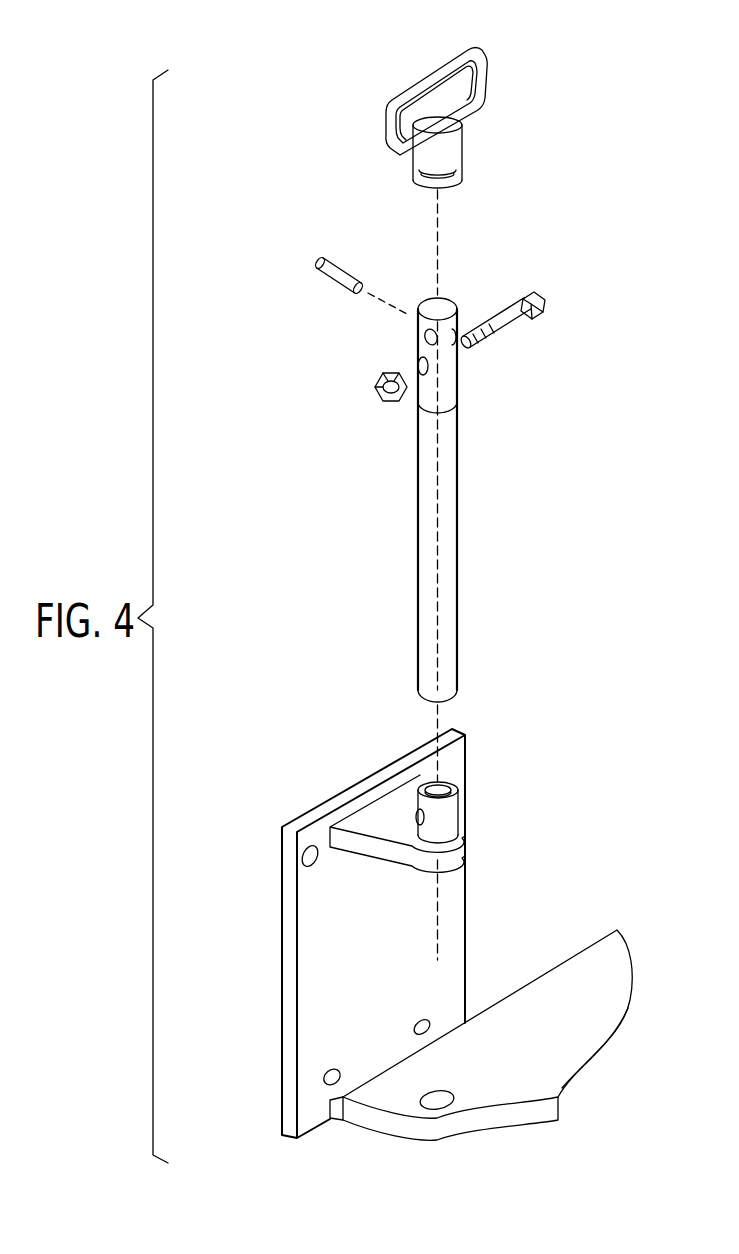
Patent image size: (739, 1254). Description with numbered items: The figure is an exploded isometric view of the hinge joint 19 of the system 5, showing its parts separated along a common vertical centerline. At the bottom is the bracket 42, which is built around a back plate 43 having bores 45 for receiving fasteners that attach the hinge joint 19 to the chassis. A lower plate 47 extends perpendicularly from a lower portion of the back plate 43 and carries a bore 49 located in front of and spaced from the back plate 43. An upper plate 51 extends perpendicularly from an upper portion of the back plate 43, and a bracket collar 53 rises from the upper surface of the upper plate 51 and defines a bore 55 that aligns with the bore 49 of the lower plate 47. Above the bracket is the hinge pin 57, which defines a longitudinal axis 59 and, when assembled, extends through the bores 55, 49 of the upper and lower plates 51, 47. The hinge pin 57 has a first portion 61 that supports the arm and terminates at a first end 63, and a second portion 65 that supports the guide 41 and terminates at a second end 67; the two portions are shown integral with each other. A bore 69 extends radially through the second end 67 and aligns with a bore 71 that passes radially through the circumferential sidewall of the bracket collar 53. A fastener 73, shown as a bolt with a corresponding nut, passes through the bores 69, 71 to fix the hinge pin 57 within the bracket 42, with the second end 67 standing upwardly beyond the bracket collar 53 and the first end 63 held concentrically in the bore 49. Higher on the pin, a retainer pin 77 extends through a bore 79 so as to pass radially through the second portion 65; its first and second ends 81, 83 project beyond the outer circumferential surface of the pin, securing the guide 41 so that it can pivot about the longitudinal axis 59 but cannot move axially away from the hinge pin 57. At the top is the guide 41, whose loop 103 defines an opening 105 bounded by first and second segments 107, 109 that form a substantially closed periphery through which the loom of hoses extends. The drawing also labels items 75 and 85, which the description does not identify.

The system 5 is at (556, 184).
The hinge joint 19 is at (498, 1067).
The guide 41 is at (444, 111).
The bracket 42 is at (420, 967).
The back plate 43 is at (337, 952).
The bores 45 is at (308, 864).
The lower plate 47 is at (527, 1052).
The bore 49 is at (440, 1095).
The upper plate 51 is at (428, 826).
The bracket collar 53 is at (458, 844).
The bore 55 is at (447, 795).
The hinge pin 57 is at (420, 500).
The longitudinal axis 59 is at (438, 556).
The first portion 61 is at (469, 521).
The first end 63 is at (456, 689).
The second portion 65 is at (466, 392).
The second end 67 is at (430, 338).
The bore 69 is at (422, 366).
The bore 71 is at (419, 826).
The fastener 73 is at (486, 328).
The pin 75 is at (325, 265).
The retainer pin 77 is at (353, 279).
The bore 79 is at (462, 345).
The first end 81 is at (353, 286).
The second end 83 is at (318, 272).
The collar 85 is at (467, 152).
The loop 103 is at (426, 62).
The opening 105 is at (450, 95).
The first segment 107 is at (480, 72).
The second segment 109 is at (389, 127).